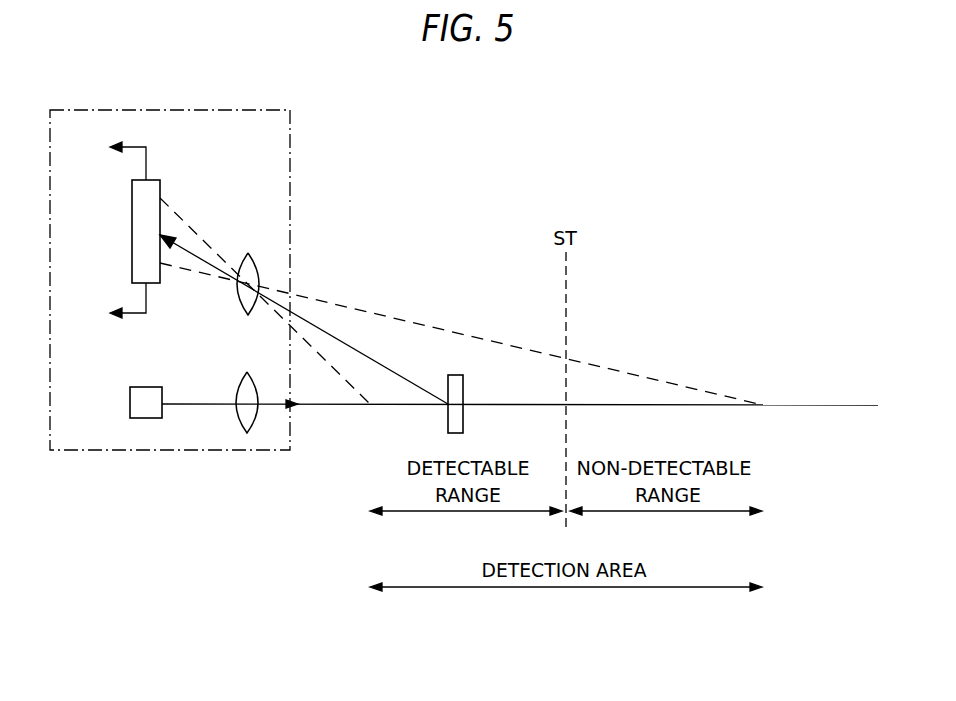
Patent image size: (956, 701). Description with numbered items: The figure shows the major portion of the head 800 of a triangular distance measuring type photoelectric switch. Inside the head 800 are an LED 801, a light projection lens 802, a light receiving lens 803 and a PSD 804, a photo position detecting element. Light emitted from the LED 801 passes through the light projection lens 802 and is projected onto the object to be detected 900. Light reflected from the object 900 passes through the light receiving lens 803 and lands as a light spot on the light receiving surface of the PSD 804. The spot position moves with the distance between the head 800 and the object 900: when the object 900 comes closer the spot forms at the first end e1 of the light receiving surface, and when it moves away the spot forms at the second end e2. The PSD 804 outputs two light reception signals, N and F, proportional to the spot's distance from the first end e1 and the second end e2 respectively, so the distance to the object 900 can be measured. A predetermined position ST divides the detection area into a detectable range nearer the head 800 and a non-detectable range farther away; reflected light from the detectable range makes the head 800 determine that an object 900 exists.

The head 800 is at (169, 109).
The LED 801 is at (143, 387).
The light projection lens 802 is at (244, 375).
The light receiving lens 803 is at (247, 255).
The PSD 804 is at (132, 234).
The object to be detected 900 is at (463, 388).
The first end e1 is at (160, 183).
The second end e2 is at (160, 277).